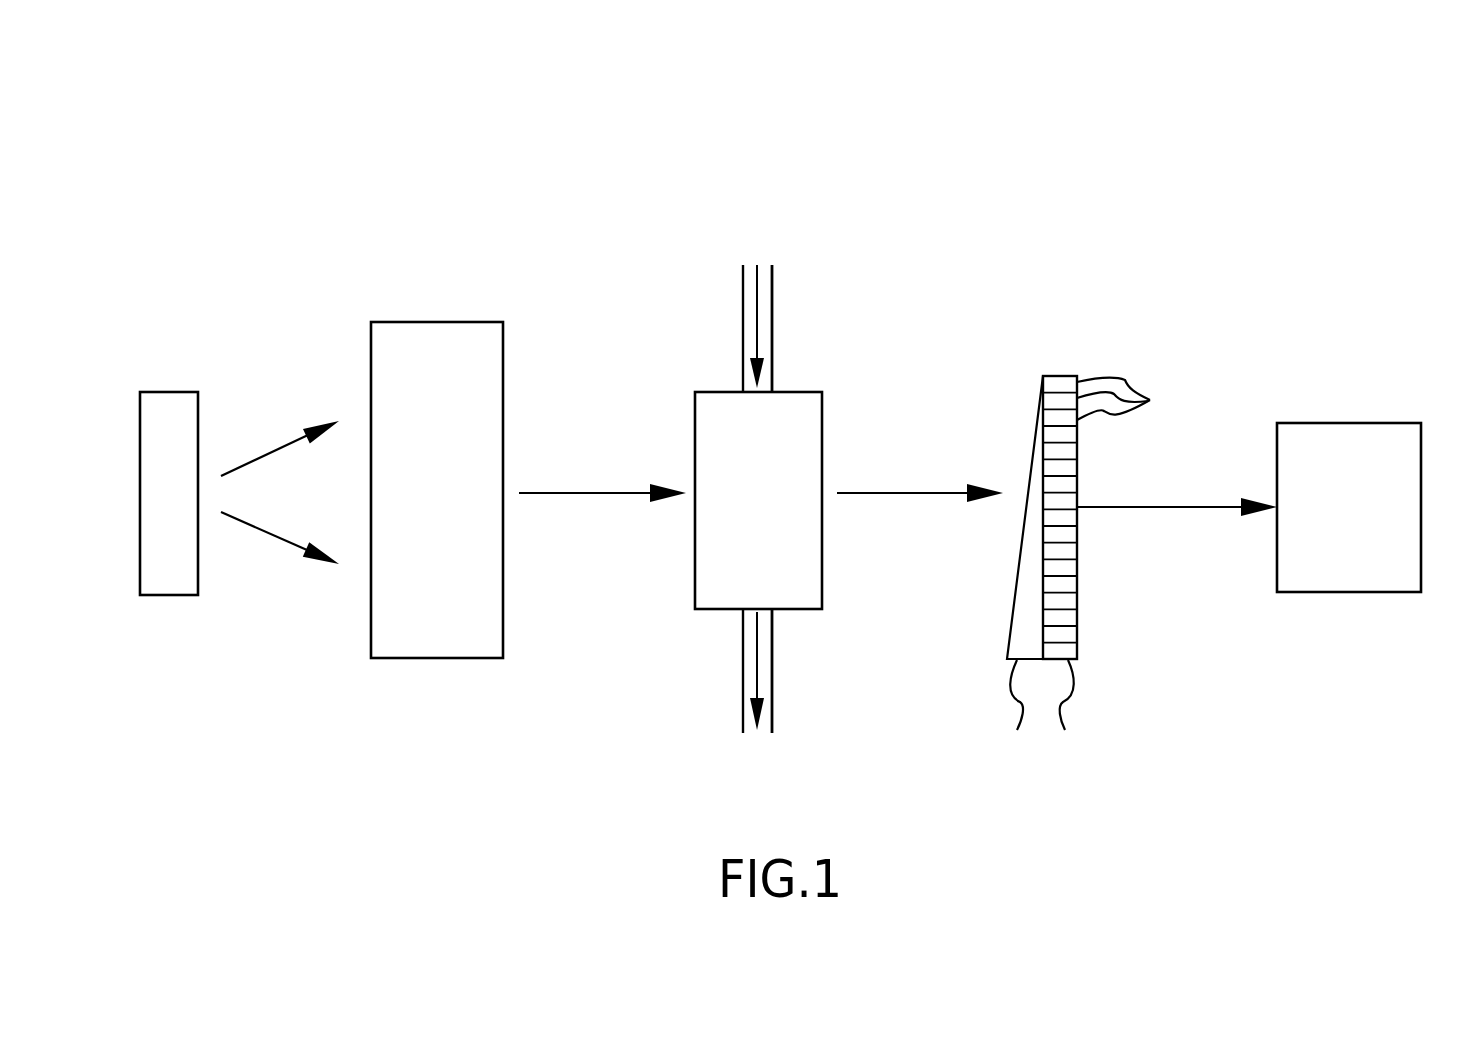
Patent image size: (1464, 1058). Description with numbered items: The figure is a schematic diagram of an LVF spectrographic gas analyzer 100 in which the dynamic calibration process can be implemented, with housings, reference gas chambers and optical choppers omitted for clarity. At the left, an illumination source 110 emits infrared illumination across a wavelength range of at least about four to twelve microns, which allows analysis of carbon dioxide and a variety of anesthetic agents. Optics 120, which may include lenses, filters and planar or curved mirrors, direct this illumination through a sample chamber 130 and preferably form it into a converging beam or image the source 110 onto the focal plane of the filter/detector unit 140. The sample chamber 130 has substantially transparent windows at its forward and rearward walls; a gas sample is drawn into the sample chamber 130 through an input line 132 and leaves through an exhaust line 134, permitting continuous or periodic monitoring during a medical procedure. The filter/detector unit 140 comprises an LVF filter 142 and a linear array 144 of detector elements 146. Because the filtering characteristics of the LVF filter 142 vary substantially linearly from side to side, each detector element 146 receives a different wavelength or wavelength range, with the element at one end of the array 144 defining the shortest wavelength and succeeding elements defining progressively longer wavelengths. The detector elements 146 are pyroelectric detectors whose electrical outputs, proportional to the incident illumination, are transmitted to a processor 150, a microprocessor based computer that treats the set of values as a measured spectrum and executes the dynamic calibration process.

The LVF spectrographic gas analyzer 100 is at (966, 232).
The illumination source 110 is at (165, 392).
The optics 120 is at (427, 322).
The sample chamber 130 is at (822, 443).
The input line 132 is at (772, 323).
The exhaust line 134 is at (772, 661).
The filter/detector unit 140 is at (1077, 335).
The LVF filter 142 is at (1016, 710).
The linear array 144 is at (1071, 710).
The detector elements 146 is at (1135, 399).
The processor 150 is at (1376, 423).